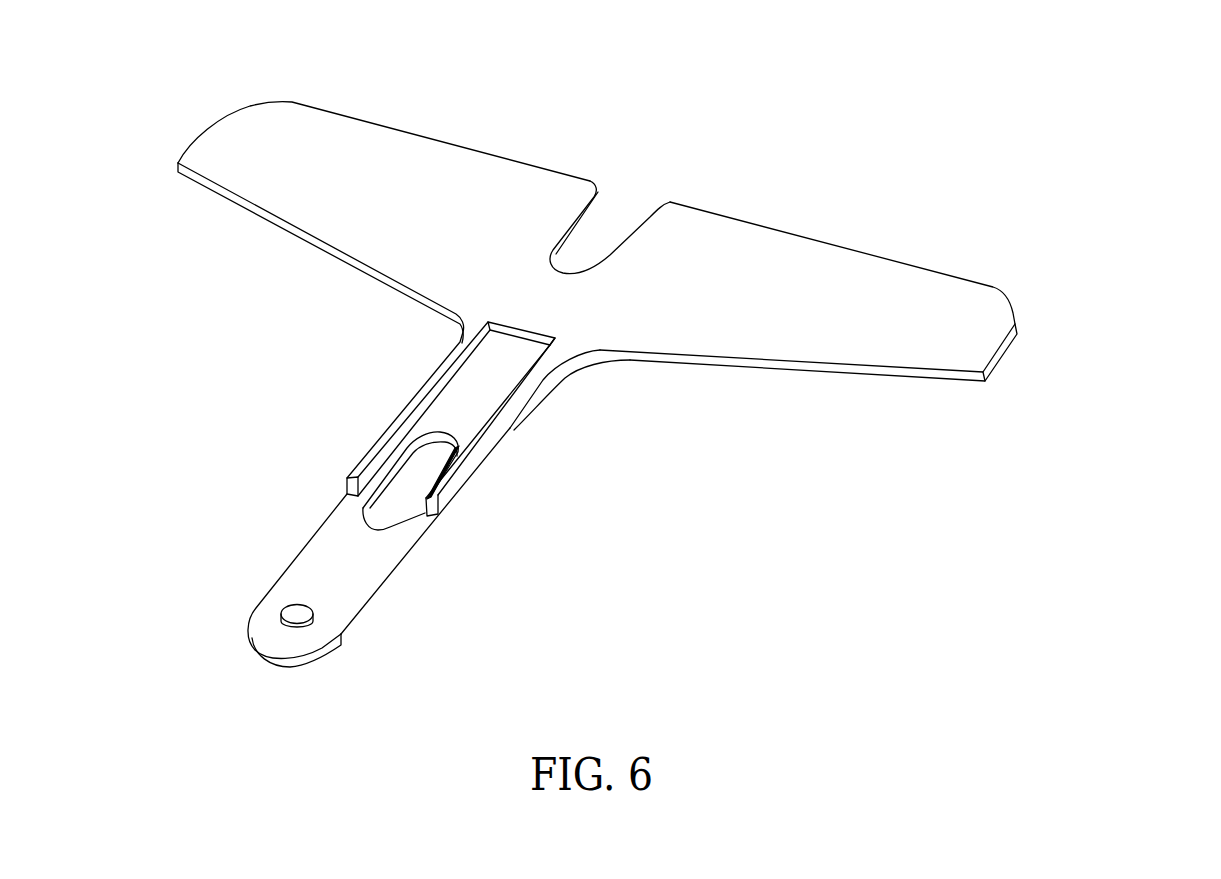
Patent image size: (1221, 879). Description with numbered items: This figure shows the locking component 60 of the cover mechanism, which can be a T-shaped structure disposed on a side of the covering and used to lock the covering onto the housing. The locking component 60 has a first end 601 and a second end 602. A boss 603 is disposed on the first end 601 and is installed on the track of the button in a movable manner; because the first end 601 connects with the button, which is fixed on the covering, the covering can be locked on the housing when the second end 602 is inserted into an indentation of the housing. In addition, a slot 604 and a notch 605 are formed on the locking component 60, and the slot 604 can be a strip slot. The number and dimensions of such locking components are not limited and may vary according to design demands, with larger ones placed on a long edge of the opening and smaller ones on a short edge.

The locking component 60 is at (689, 390).
The first end 601 is at (302, 662).
The second end 602 is at (918, 264).
The boss 603 is at (292, 611).
The slot 604 is at (395, 510).
The notch 605 is at (615, 223).